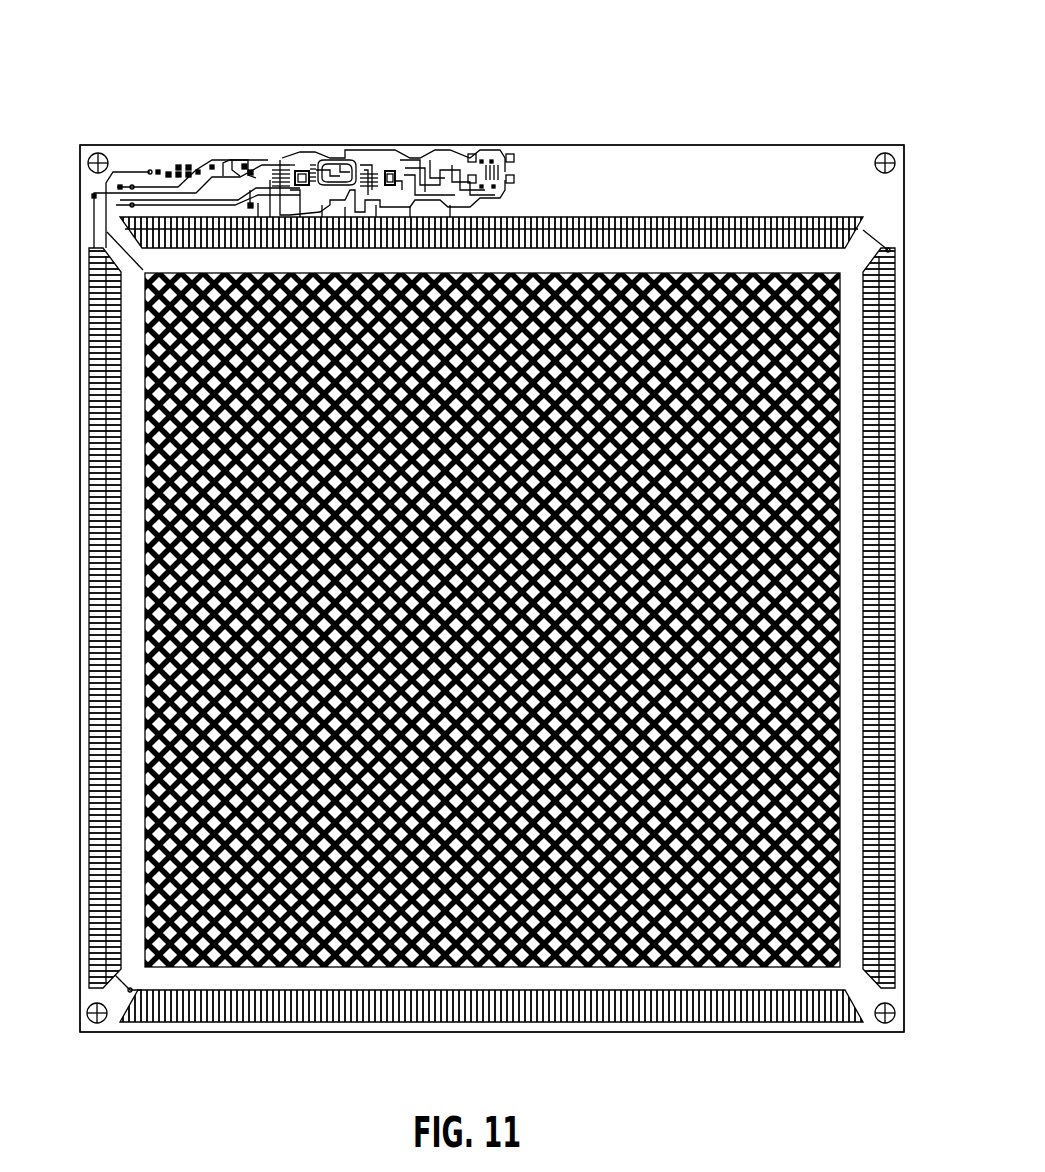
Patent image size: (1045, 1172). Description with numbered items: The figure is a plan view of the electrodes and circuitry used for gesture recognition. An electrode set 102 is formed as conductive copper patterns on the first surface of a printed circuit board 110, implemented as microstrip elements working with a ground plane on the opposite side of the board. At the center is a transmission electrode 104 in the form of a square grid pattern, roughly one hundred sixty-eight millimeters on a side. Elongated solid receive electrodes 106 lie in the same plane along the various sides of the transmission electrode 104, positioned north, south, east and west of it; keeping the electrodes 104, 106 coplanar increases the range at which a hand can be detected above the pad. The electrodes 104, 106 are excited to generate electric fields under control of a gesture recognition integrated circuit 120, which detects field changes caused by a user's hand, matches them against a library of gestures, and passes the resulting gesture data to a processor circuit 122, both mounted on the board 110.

The electrode set 102 is at (808, 98).
The transmission electrode 104 is at (147, 345).
The receive electrodes 106 is at (723, 228).
The printed circuit board 110 is at (640, 178).
The gesture recognition integrated circuit 120 is at (302, 171).
The processor circuit 122 is at (390, 171).